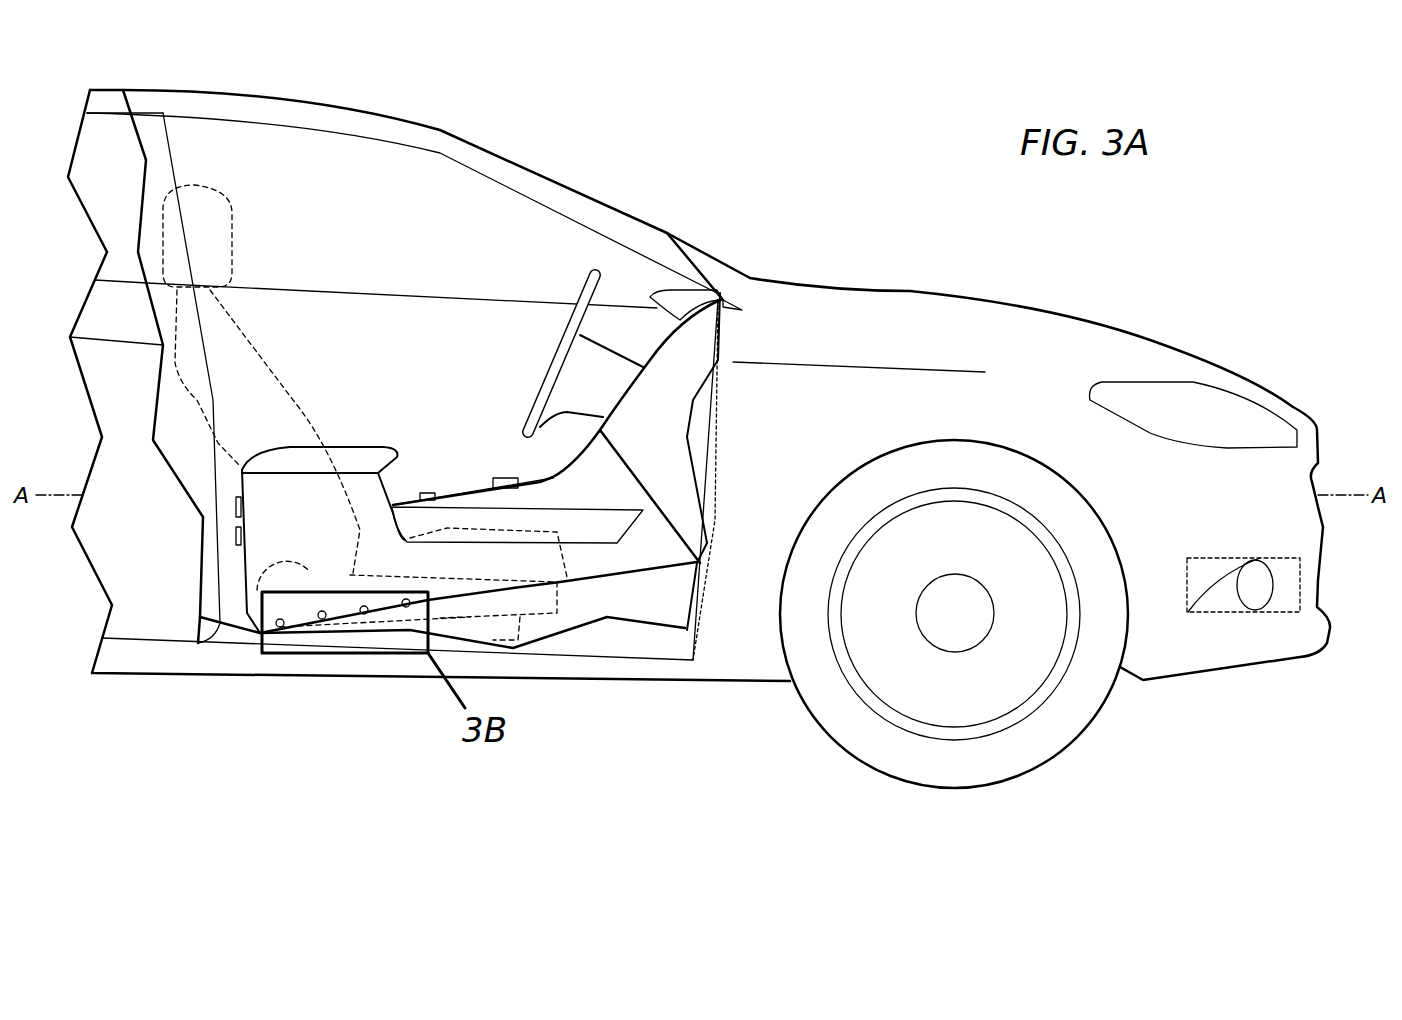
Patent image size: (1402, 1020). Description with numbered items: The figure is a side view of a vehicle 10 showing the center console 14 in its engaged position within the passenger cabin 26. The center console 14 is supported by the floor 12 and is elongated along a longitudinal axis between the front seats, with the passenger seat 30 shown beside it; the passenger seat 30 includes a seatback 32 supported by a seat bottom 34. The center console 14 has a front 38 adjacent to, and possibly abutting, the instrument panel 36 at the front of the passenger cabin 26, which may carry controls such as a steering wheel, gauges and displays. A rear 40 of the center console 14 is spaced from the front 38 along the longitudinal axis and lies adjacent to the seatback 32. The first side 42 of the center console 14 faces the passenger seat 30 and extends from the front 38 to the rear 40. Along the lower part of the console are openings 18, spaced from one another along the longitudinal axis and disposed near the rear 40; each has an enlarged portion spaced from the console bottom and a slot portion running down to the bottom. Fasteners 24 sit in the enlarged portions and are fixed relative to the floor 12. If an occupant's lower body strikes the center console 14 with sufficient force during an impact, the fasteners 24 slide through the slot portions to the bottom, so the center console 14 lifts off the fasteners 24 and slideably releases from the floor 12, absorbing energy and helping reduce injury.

The vehicle 10 is at (752, 225).
The floor 12 is at (512, 650).
The center console 14 is at (467, 483).
The openings 18 is at (395, 600).
The fasteners 24 is at (406, 607).
The passenger cabin 26 is at (498, 213).
The passenger seat 30 is at (240, 313).
The seatback 32 is at (250, 343).
The seat bottom 34 is at (567, 567).
The instrument panel 36 is at (657, 343).
The front 38 is at (630, 453).
The rear 40 is at (243, 593).
The first side 42 is at (556, 524).